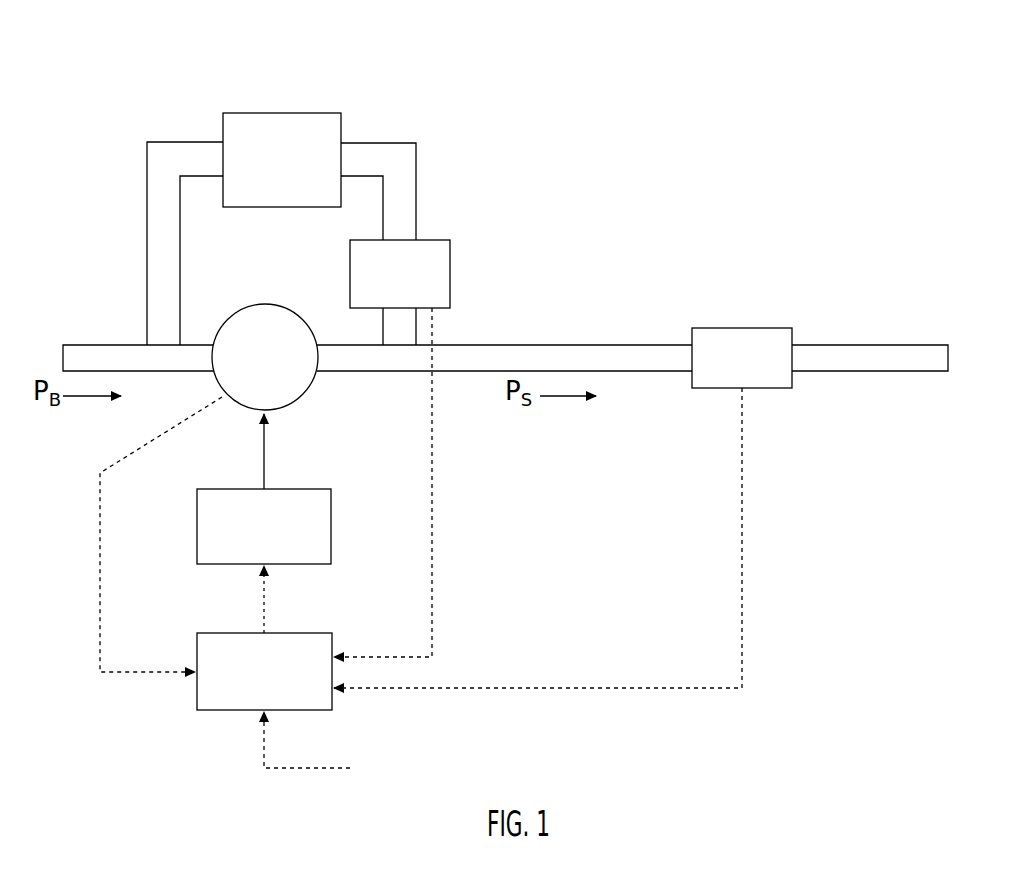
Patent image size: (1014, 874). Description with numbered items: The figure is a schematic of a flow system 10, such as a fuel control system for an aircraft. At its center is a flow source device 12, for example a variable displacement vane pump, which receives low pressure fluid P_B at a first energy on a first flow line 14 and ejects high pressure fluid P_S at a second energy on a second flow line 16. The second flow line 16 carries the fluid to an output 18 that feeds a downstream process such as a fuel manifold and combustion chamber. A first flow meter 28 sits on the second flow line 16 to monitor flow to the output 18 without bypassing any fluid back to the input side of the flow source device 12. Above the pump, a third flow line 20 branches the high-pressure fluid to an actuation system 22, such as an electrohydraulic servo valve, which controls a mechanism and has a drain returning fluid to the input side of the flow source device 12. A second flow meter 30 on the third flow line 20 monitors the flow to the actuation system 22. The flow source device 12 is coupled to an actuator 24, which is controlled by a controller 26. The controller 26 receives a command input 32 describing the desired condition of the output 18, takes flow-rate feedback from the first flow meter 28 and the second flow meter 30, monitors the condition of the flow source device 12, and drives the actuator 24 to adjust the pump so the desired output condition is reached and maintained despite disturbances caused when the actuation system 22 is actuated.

The flow system 10 is at (802, 116).
The flow source device 12 is at (260, 345).
The first flow line 14 is at (107, 358).
The second flow line 16 is at (613, 358).
The output 18 is at (942, 360).
The third flow line 20 is at (400, 335).
The actuation system 22 is at (294, 141).
The actuator 24 is at (295, 515).
The controller 26 is at (295, 668).
The first flow meter 28 is at (742, 360).
The second flow meter 30 is at (400, 275).
The command input 32 is at (321, 749).